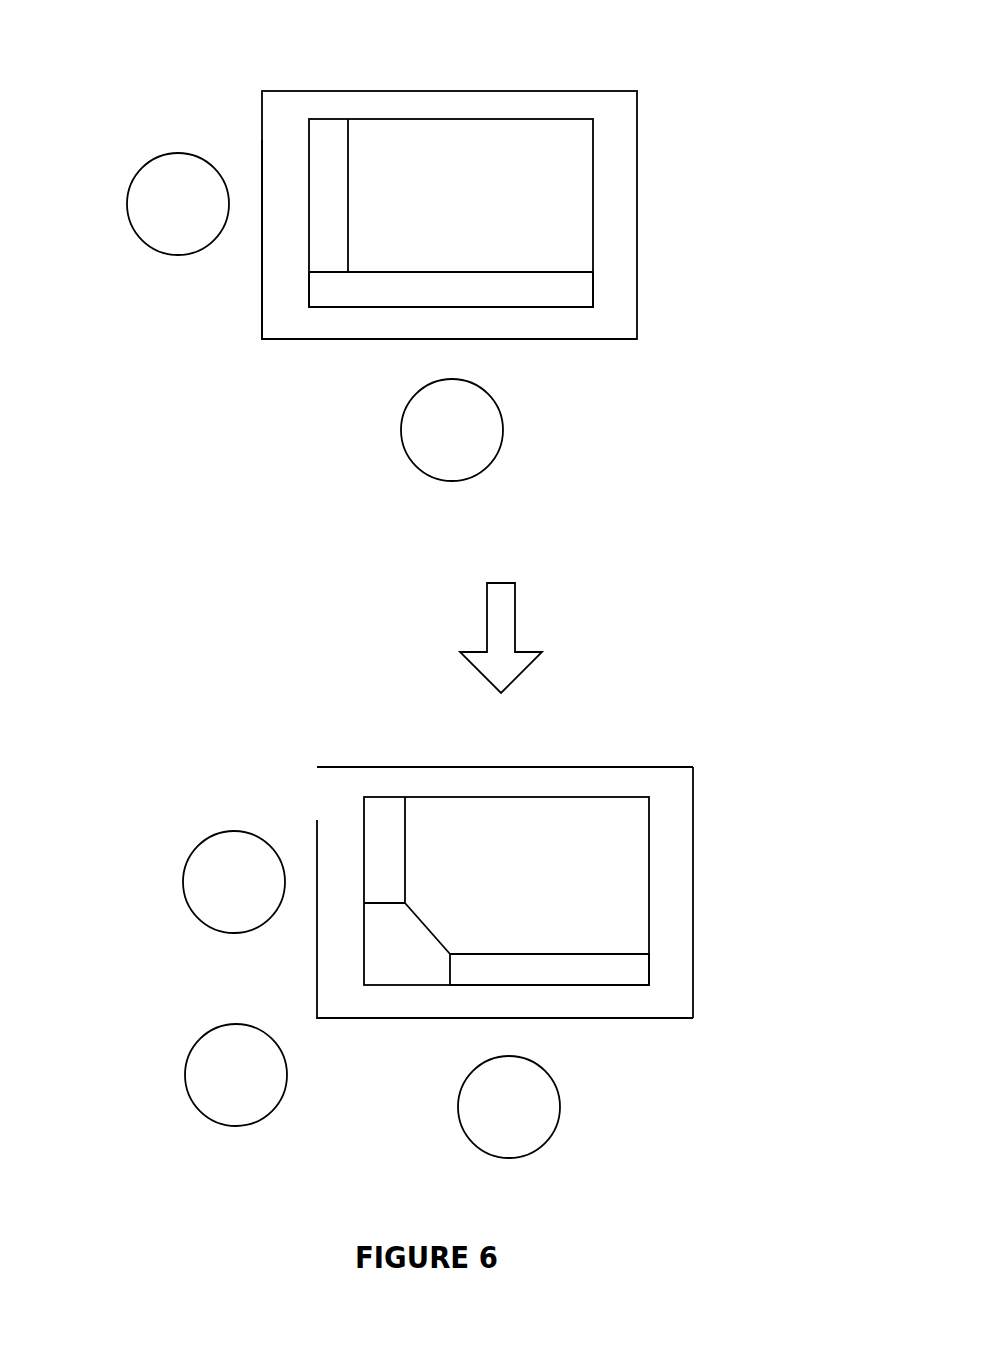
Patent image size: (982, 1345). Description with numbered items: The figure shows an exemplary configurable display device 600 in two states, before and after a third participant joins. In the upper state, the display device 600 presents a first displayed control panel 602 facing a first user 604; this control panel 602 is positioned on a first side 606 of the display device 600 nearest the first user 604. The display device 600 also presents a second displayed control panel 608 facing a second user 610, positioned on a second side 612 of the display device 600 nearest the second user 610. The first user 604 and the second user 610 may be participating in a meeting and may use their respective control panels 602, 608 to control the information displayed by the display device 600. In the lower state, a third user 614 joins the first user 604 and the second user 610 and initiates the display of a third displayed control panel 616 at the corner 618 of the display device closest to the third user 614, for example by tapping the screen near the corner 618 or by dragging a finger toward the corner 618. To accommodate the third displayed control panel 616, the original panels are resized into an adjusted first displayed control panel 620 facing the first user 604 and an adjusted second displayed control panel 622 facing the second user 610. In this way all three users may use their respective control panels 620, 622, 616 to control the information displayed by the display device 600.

The display device 600 is at (826, 129).
The first displayed control panel 602 is at (577, 293).
The first user 604 is at (503, 422).
The first side 606 is at (353, 339).
The second displayed control panel 608 is at (329, 142).
The second user 610 is at (127, 205).
The second side 612 is at (262, 138).
The third user 614 is at (185, 1078).
The third displayed control panel 616 is at (408, 943).
The corner 618 is at (317, 1018).
The adjusted first displayed control panel 620 is at (633, 972).
The adjusted second displayed control panel 622 is at (383, 818).